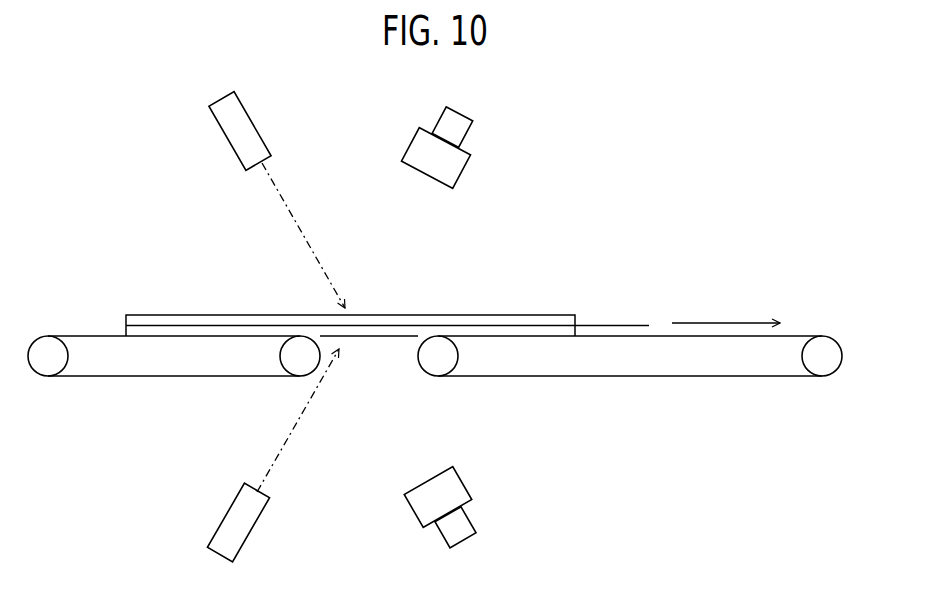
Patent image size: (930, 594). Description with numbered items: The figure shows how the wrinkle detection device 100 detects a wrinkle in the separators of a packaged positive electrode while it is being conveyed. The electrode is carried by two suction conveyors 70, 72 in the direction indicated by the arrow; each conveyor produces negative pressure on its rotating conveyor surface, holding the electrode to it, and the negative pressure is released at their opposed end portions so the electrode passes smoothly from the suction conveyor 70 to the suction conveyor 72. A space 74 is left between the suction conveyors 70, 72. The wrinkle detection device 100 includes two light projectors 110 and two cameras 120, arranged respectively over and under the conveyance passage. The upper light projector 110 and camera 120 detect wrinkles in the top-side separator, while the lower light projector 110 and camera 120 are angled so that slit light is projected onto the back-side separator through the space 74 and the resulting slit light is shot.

The wrinkle detection device 100 is at (93, 131).
The suction conveyor 70 is at (170, 358).
The suction conveyor 72 is at (657, 360).
The space 74 is at (369, 363).
The light projector 110 is at (225, 107).
The camera 120 is at (468, 130).